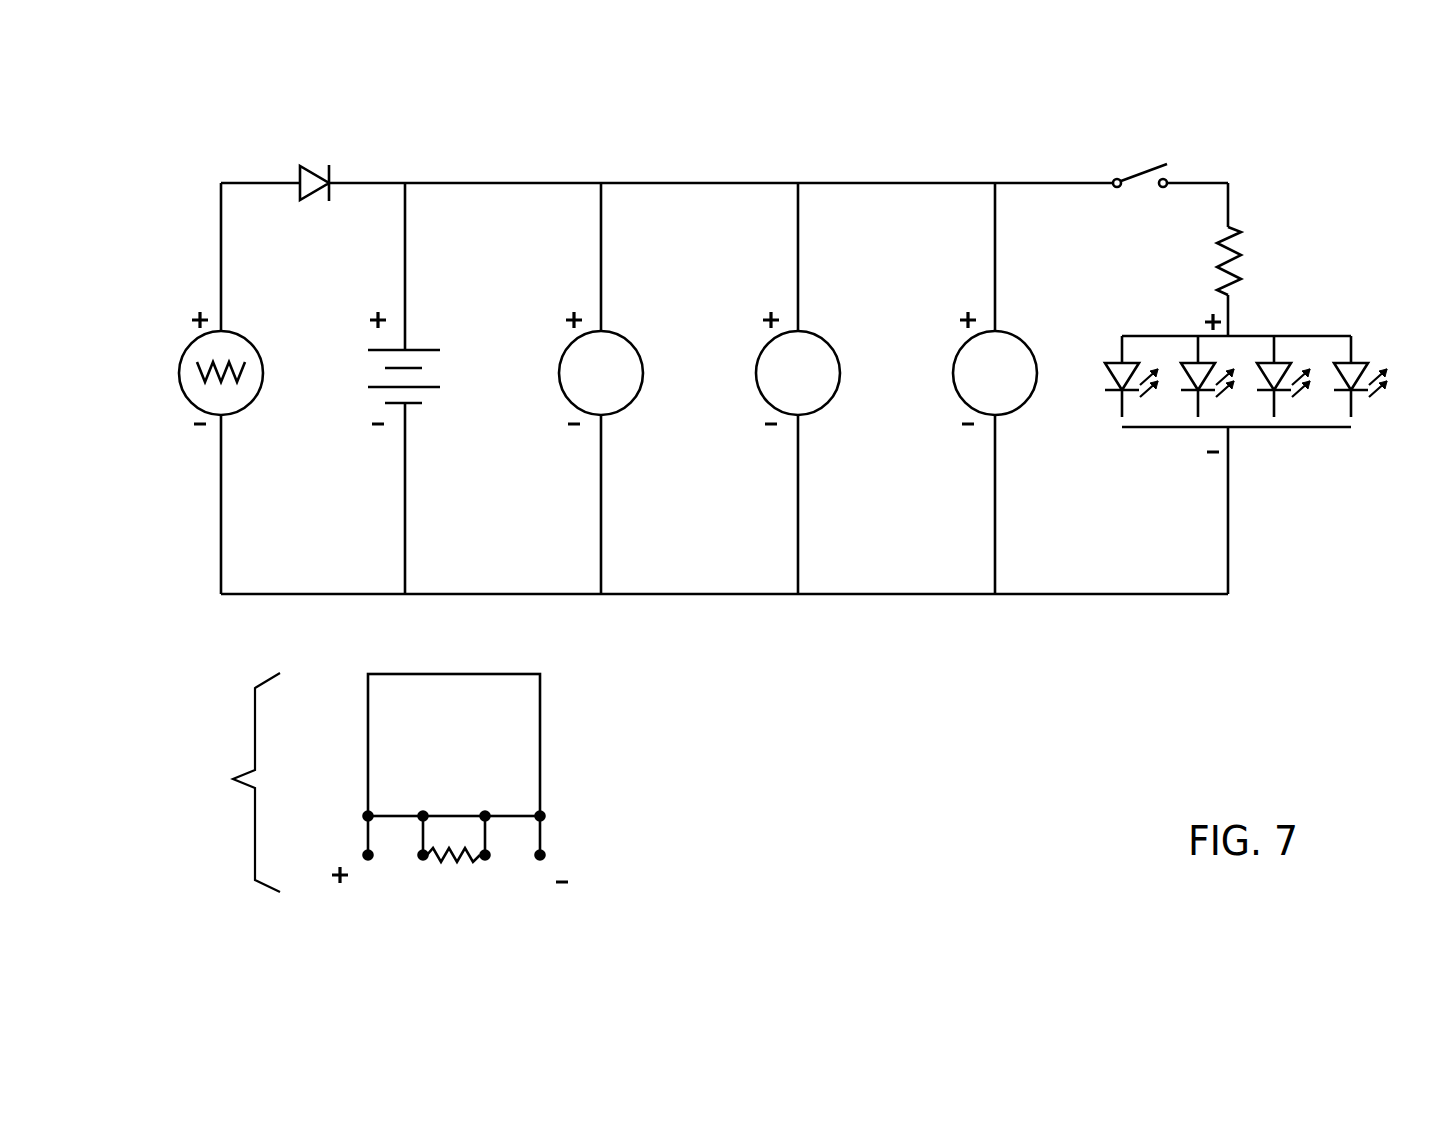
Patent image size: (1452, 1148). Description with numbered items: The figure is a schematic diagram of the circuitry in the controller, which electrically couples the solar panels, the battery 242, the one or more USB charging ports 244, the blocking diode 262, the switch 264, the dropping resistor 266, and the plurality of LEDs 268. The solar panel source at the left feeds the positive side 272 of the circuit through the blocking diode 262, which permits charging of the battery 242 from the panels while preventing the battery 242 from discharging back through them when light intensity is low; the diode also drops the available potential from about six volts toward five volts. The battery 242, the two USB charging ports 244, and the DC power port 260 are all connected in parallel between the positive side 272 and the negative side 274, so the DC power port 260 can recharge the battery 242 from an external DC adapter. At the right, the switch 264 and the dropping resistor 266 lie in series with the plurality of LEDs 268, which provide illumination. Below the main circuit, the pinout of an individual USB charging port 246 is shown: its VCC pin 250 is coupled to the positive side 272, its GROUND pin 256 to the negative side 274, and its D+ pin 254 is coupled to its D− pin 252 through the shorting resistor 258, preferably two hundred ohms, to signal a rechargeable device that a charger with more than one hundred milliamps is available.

The battery 242 is at (407, 405).
The USB charging ports 244 is at (762, 393).
The individual USB charging port 246 is at (356, 782).
The VCC pin 250 is at (368, 860).
The D− pin 252 is at (423, 860).
The D+ pin 254 is at (490, 860).
The GROUND pin 256 is at (545, 855).
The shorting resistor 258 is at (455, 862).
The DC power port 260 is at (1024, 342).
The blocking diode 262 is at (316, 168).
The switch 264 is at (1136, 158).
The dropping resistor 266 is at (1250, 255).
The plurality of LEDs 268 is at (1212, 393).
The positive side 272 is at (630, 175).
The negative side 274 is at (825, 595).